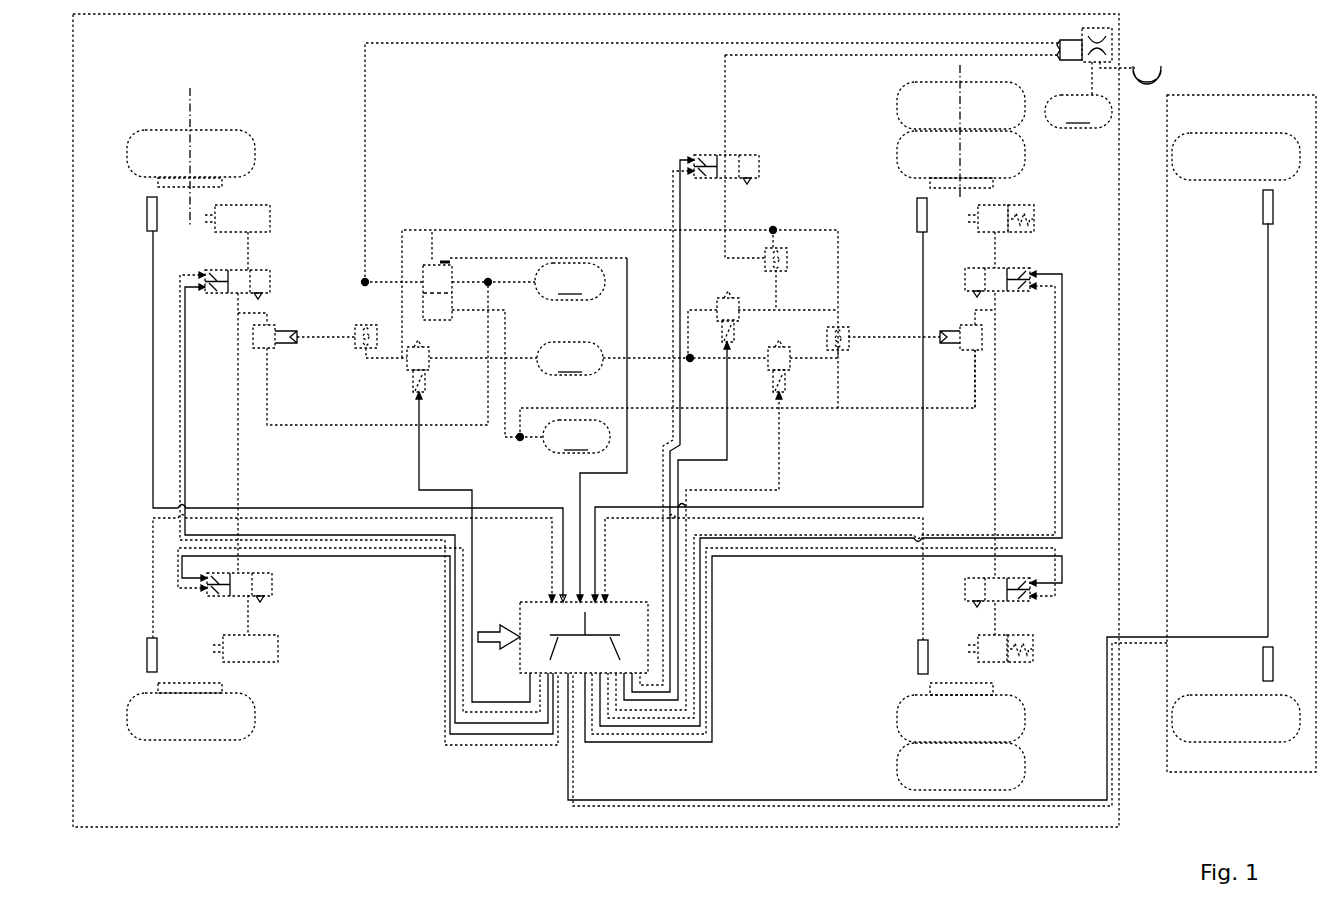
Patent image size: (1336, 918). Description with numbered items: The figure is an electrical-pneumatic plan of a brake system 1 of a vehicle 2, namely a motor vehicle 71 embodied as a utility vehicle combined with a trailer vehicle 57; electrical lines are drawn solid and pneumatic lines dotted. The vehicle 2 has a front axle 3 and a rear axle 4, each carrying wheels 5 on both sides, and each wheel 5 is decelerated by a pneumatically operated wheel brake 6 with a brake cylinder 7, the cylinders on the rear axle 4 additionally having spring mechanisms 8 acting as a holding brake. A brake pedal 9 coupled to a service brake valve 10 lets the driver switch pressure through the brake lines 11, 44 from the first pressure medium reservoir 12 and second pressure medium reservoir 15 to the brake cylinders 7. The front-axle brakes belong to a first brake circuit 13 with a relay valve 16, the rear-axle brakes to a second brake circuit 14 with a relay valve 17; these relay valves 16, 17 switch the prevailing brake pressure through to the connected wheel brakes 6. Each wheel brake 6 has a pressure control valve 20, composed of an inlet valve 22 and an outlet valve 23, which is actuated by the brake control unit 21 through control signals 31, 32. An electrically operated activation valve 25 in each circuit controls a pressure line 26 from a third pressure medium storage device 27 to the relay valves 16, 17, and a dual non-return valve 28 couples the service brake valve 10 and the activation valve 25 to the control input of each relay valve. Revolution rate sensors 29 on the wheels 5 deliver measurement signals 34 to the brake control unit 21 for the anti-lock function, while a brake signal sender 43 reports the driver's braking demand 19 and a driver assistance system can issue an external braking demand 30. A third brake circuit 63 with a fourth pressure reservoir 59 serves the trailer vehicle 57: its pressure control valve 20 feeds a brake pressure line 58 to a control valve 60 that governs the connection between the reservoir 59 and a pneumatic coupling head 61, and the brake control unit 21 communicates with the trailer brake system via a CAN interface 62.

The brake system 1 is at (412, 658).
The vehicle 2 is at (306, 18).
The front axle 3 is at (196, 104).
The rear axle 4 is at (963, 78).
The wheels 5 is at (238, 145).
The wheel brakes 6 is at (250, 186).
The brake cylinder 7 is at (255, 212).
The spring mechanisms 8 is at (1030, 220).
The brake pedal 9 is at (430, 265).
The service brake valve 10 is at (418, 275).
The brake line 11 is at (368, 278).
The first pressure medium reservoir 12 is at (545, 281).
The first brake circuit 13 is at (335, 425).
The second brake circuit 14 is at (690, 408).
The second pressure medium reservoir 15 is at (564, 436).
The relay valve 16 is at (275, 333).
The relay valve 17 is at (975, 335).
The driver's braking demand 19 is at (571, 255).
The pressure control valve 20 is at (642, 370).
The brake control unit 21 is at (628, 600).
The inlet valve 22 is at (235, 283).
The outlet valve 23 is at (265, 278).
The activation valve 25 is at (420, 360).
The pressure line 26 is at (395, 365).
The third pressure medium storage device 27 is at (634, 358).
The dual non-return valve 28 is at (350, 352).
The revolution rate sensors 29 is at (148, 212).
The external braking demand 30 is at (522, 632).
The control signals 31 is at (178, 400).
The control signals 32 is at (188, 412).
The measurement signals 34 is at (150, 460).
The brake signal sender 43 is at (445, 262).
The brake line 44 is at (528, 228).
The trailer vehicle 57 is at (1167, 328).
The brake pressure line 58 is at (720, 82).
The fourth pressure reservoir 59 is at (1078, 95).
The control valve 60 is at (1112, 35).
The pneumatic coupling head 61 is at (1160, 70).
The CAN interface 62 is at (1148, 637).
The third brake circuit 63 is at (768, 308).
The motor vehicle 71 is at (1128, 797).